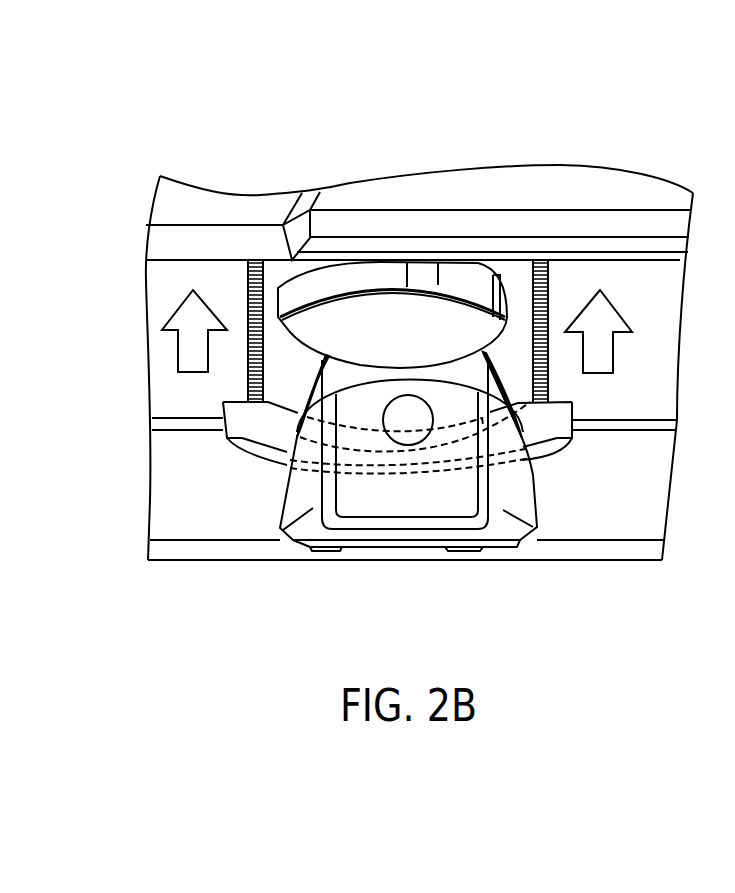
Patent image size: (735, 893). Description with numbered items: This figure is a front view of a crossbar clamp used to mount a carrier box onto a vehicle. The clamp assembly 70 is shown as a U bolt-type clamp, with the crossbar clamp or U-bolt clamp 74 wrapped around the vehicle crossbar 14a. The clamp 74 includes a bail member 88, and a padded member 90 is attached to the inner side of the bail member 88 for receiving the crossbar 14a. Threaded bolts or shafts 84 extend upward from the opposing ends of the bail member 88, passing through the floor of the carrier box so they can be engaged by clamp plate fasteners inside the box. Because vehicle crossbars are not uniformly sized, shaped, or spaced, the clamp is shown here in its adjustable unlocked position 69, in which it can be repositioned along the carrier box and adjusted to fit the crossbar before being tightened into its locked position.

The unlocked position 69 is at (604, 118).
The clamp assembly 70 is at (316, 142).
The threaded bolts or shafts 84 is at (247, 273).
The vehicle crossbar 14a is at (438, 300).
The bail member 88 is at (557, 433).
The crossbar clamp or U-bolt clamp 74 is at (605, 520).
The padded member 90 is at (360, 433).